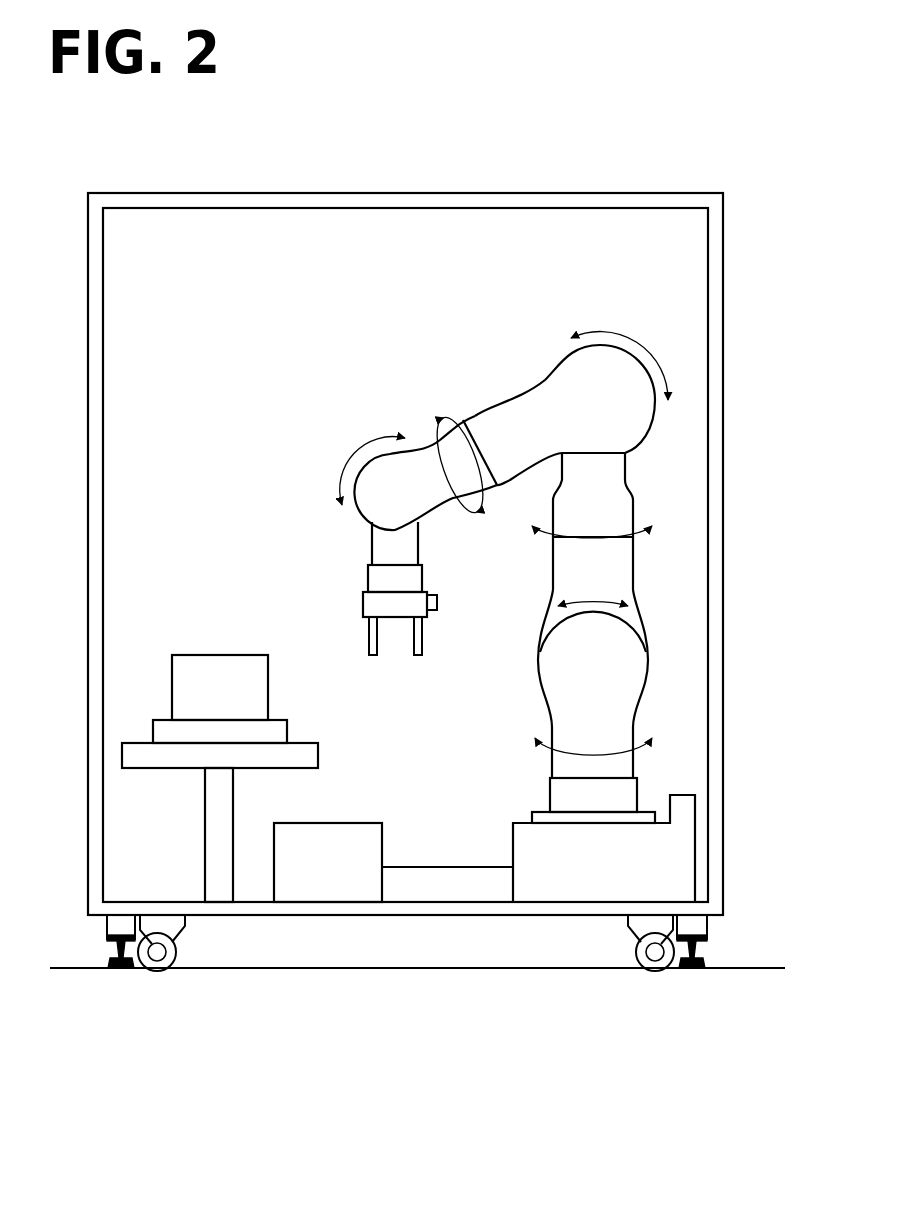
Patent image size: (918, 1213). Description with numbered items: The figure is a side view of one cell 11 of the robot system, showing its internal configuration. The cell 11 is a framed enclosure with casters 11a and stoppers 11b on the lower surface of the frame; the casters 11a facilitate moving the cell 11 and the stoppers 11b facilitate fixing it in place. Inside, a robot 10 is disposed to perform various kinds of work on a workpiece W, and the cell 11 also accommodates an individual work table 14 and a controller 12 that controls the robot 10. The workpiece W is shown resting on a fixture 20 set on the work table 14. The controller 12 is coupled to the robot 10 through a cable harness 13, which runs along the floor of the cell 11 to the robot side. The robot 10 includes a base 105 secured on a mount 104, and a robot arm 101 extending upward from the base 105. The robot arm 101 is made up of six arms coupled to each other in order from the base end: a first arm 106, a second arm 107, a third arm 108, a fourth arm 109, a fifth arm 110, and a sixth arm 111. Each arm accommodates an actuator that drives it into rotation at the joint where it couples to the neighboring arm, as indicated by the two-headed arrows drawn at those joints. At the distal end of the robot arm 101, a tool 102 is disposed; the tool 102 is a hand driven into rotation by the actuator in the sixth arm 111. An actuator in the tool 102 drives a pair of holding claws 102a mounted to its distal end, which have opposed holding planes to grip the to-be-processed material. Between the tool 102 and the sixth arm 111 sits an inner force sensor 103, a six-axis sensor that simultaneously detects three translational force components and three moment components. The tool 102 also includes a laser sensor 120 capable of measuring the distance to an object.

The robot 10 is at (380, 358).
The cell 11 is at (697, 170).
The casters 11a is at (163, 971).
The stoppers 11b is at (117, 970).
The controller 12 is at (358, 823).
The cable harness 13 is at (448, 867).
The work table 14 is at (300, 743).
The jig 20 is at (162, 720).
The workpiece W is at (195, 655).
The robot arm 101 is at (540, 607).
The tool 102 is at (371, 607).
The holding claws 102a is at (418, 657).
The inner force sensor 103 is at (378, 580).
The mount 104 is at (673, 862).
The base 105 is at (556, 793).
The first arm 106 is at (632, 676).
The second arm 107 is at (559, 573).
The third arm 108 is at (622, 462).
The fourth arm 109 is at (525, 407).
The fifth arm 110 is at (420, 452).
The sixth arm 111 is at (372, 548).
The laser sensor 120 is at (438, 603).